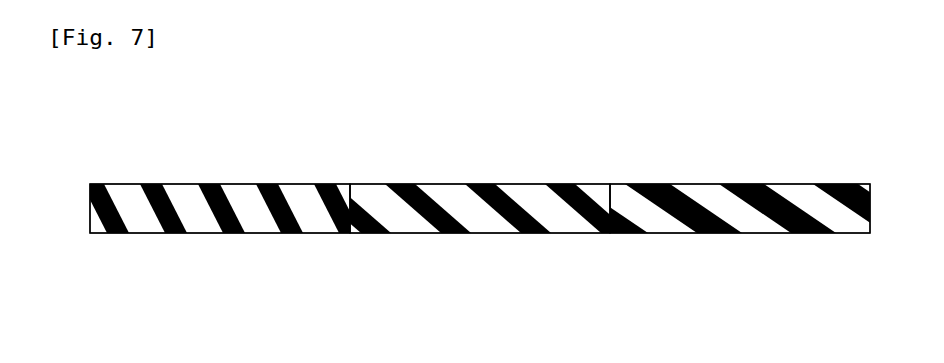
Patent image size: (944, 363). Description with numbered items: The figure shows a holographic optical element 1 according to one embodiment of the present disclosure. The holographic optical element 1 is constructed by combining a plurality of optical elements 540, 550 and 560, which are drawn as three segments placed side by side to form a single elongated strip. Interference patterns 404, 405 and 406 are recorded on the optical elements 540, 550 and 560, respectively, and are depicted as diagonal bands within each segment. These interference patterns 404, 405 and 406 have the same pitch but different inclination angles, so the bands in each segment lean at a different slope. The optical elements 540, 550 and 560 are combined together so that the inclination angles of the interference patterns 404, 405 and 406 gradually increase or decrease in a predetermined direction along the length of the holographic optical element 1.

The holographic optical element 1 is at (96, 150).
The interference pattern 404 is at (221, 254).
The interference pattern 405 is at (468, 252).
The interference pattern 406 is at (730, 253).
The optical element 540 is at (278, 235).
The optical element 550 is at (522, 235).
The optical element 560 is at (782, 235).